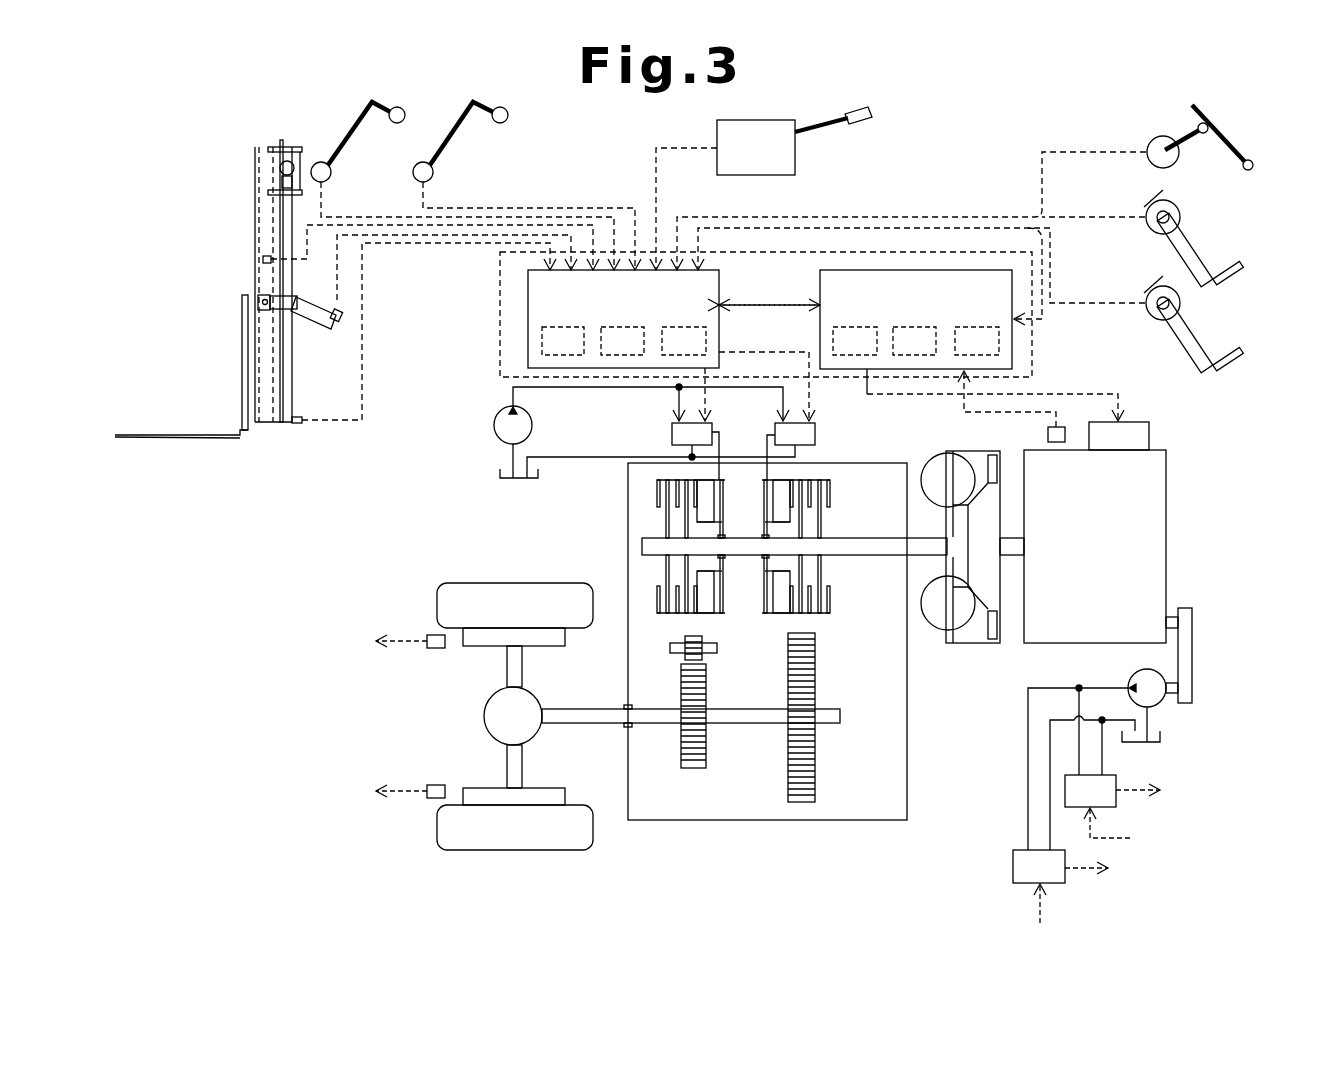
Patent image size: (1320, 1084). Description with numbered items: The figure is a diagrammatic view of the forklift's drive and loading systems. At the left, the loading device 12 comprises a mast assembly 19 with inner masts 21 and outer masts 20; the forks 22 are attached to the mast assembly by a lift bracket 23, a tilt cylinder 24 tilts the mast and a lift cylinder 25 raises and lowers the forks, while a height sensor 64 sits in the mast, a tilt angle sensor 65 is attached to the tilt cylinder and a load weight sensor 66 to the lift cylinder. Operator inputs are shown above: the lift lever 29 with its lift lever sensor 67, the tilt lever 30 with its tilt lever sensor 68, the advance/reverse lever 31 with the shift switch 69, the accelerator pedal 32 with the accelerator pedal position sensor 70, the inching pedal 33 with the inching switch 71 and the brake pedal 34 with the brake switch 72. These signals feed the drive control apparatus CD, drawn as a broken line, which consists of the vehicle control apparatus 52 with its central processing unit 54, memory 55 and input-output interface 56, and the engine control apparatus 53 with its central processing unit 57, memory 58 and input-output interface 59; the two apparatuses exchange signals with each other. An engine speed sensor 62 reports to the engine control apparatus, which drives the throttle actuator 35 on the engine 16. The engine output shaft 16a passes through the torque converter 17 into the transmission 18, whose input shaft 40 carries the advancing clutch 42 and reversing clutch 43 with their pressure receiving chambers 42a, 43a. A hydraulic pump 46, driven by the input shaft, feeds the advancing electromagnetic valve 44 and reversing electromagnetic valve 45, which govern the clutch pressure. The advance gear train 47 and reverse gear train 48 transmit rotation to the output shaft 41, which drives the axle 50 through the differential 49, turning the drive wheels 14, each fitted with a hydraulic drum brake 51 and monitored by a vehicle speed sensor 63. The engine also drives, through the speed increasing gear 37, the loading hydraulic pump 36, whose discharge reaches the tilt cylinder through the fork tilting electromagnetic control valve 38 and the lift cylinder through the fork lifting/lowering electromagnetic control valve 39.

The loading device 12 is at (224, 197).
The mast assembly 19 is at (172, 212).
The inner mast 21 is at (255, 218).
The outer mast 20 is at (265, 245).
The height sensor 64 is at (263, 264).
The lift bracket 23 is at (242, 350).
The fork 22 is at (210, 435).
The tilt cylinder 24 is at (313, 325).
The tilt angle sensor 65 is at (343, 318).
The lift cylinder 25 is at (285, 388).
The load weight sensor 66 is at (300, 424).
The lift lever 29 is at (394, 108).
The lift lever sensor 67 is at (332, 176).
The tilt lever 30 is at (496, 108).
The tilt lever sensor 68 is at (434, 176).
The advance/reverse lever 31 is at (818, 133).
The shift switch 69 is at (717, 134).
The accelerator pedal position sensor 70 is at (1150, 142).
The accelerator pedal 32 is at (1232, 128).
The inching pedal 33 is at (1200, 232).
The inching switch 71 is at (1148, 228).
The brake pedal 34 is at (1202, 322).
The brake switch 72 is at (1146, 312).
The drive control apparatus CD is at (500, 318).
The vehicle control apparatus 52 is at (528, 281).
The central processing unit 54 is at (563, 342).
The random access memory 55 is at (622, 342).
The input-output interface 56 is at (735, 374).
The engine control apparatus 53 is at (1000, 351).
The central processing unit 57 is at (855, 342).
The random access memory 58 is at (914, 342).
The input-output interface 59 is at (977, 342).
The engine speed sensor 62 is at (1047, 434).
The throttle actuator 35 is at (1150, 437).
The hydraulic pump 46 is at (494, 432).
The reversing electromagnetic valve 45 is at (672, 433).
The advancing electromagnetic valve 44 is at (816, 433).
The pressure receiving chamber 43a is at (725, 480).
The pressure receiving chamber 42a is at (765, 480).
The transmission 18 is at (912, 774).
The input shaft 40 is at (862, 556).
The reversing clutch 43 is at (653, 496).
The advancing clutch 42 is at (835, 505).
The output shaft 41 is at (655, 728).
The reverse gear train 48 is at (706, 762).
The advance gear train 47 is at (815, 768).
The differential 49 is at (484, 716).
The axle 50 is at (507, 676).
The hydraulic drum brake 51 is at (560, 646).
The drive wheel 14 is at (480, 583).
The vehicle speed sensor 63 is at (436, 648).
The torque converter 17 is at (966, 645).
The engine 16 is at (1166, 503).
The output shaft 16a is at (1012, 534).
The speed increasing gear 37 is at (1192, 647).
The hydraulic pump 36 is at (1131, 672).
The fork tilting electromagnetic control valve 38 is at (1131, 792).
The fork lifting/lowering electromagnetic control valve 39 is at (1080, 867).